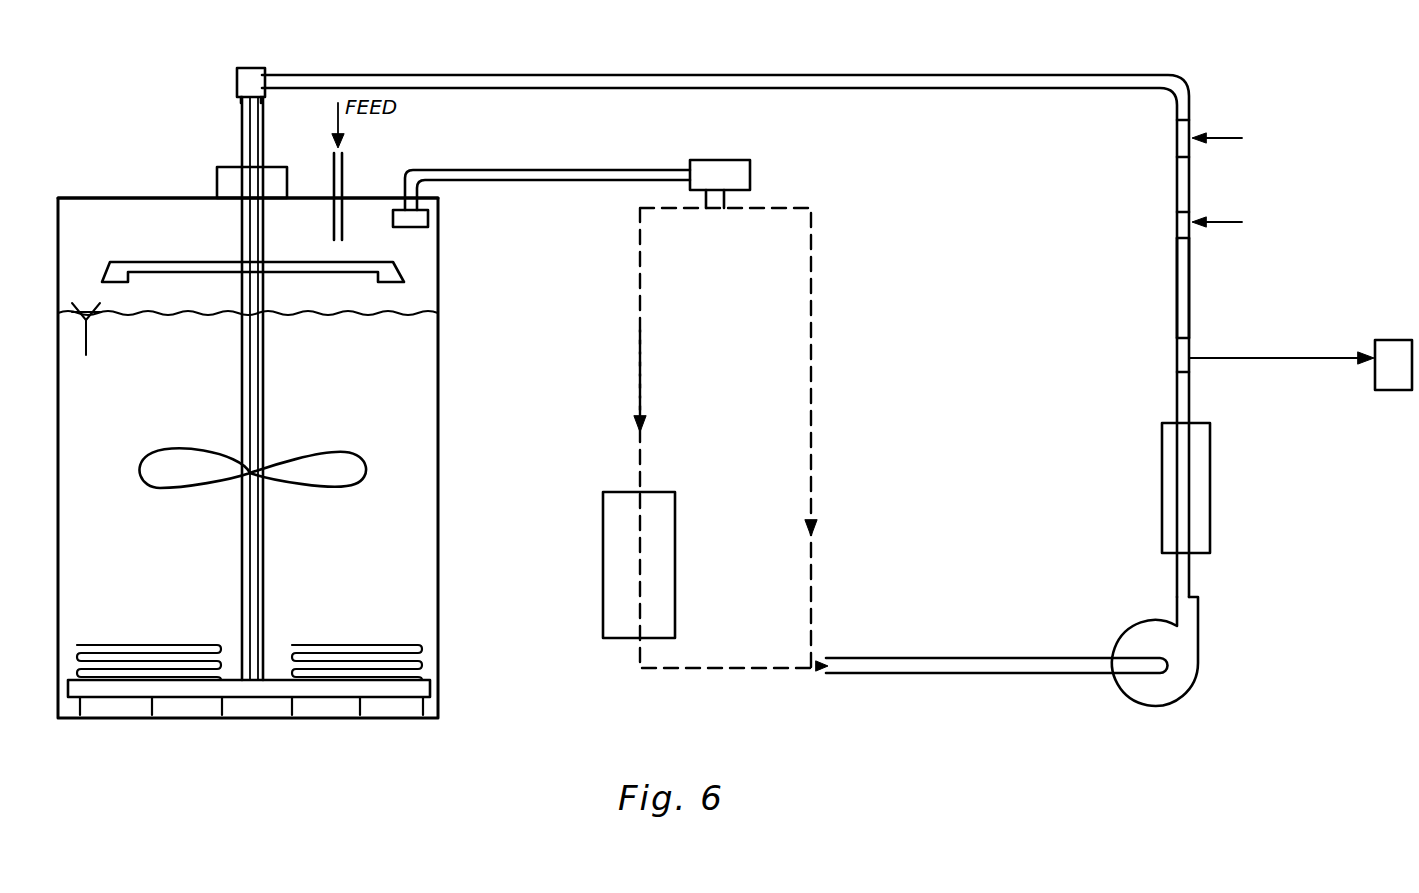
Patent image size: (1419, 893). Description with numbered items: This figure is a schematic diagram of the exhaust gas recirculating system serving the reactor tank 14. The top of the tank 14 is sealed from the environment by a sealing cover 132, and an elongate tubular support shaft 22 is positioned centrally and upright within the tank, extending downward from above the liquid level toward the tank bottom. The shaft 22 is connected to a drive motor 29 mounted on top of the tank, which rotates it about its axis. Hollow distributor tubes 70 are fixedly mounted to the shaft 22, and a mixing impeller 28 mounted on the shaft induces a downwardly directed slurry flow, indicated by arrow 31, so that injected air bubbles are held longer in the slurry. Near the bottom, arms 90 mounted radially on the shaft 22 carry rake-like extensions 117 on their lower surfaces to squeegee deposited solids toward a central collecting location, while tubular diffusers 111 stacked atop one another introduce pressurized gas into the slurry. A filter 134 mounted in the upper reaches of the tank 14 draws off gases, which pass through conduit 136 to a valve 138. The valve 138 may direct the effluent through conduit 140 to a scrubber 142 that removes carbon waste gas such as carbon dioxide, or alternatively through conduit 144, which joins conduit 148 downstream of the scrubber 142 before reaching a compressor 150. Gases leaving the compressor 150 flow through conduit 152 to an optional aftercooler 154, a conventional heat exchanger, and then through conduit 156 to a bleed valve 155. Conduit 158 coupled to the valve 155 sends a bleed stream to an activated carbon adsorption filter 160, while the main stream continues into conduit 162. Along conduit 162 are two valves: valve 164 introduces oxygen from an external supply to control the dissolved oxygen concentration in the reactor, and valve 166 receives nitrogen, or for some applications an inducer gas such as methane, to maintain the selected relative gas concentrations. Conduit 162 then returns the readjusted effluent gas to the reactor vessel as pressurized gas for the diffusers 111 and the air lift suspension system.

The tank 14 is at (438, 450).
The sealing cover 132 is at (97, 198).
The support shaft 22 is at (253, 148).
The drive motor 29 is at (218, 167).
The hollow distributor tubes 70 is at (345, 274).
The arrow indicating downward slurry flow 31 is at (242, 394).
The mixing impeller 28 is at (340, 465).
The arms 90 is at (392, 690).
The rake-like extensions 117 is at (222, 700).
The tubular diffusers 111 is at (378, 672).
The filter 134 is at (428, 218).
The conduit 136 is at (540, 170).
The valve 138 is at (737, 168).
The conduit 140 is at (640, 336).
The scrubber 142 is at (665, 542).
The conduit 144 is at (811, 412).
The conduit 148 is at (814, 674).
The compressor 150 is at (1140, 684).
The conduit 152 is at (1197, 584).
The aftercooler 154 is at (1210, 518).
The bleed valve 155 is at (1177, 360).
The conduit 156 is at (1177, 404).
The conduit 158 is at (1270, 357).
The activated carbon adsorption filter 160 is at (1396, 374).
The conduit 162 is at (770, 73).
The valve 164 is at (1177, 222).
The valve 166 is at (1177, 138).